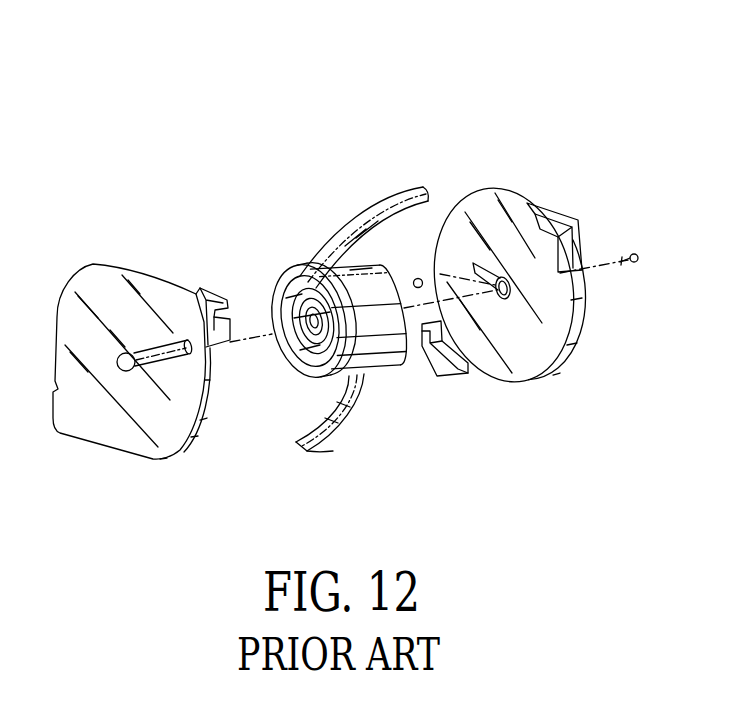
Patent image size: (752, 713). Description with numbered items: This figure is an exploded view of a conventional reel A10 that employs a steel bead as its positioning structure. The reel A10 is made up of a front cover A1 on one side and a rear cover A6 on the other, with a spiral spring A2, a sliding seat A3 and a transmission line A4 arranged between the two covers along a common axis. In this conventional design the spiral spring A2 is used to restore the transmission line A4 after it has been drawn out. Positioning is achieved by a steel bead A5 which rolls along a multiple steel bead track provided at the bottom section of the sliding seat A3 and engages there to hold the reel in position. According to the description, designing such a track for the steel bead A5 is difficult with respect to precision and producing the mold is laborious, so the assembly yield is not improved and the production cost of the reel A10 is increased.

The front cover A1 is at (108, 290).
The spiral spring A2 is at (285, 357).
The sliding seat A3 is at (317, 240).
The transmission line A4 is at (370, 207).
The steel bead A5 is at (412, 278).
The rear cover A6 is at (515, 210).
The conventional reel A10 is at (414, 110).